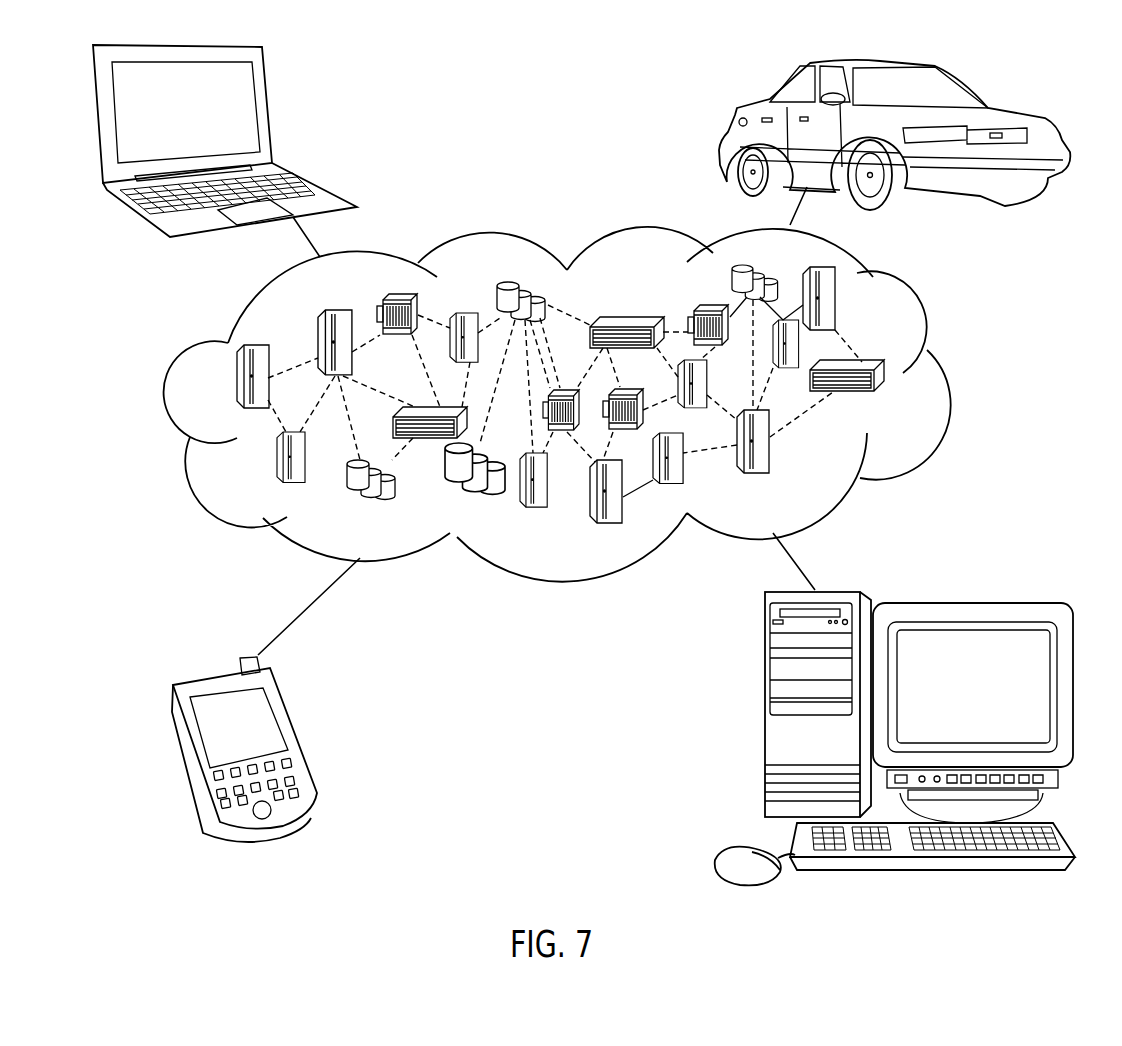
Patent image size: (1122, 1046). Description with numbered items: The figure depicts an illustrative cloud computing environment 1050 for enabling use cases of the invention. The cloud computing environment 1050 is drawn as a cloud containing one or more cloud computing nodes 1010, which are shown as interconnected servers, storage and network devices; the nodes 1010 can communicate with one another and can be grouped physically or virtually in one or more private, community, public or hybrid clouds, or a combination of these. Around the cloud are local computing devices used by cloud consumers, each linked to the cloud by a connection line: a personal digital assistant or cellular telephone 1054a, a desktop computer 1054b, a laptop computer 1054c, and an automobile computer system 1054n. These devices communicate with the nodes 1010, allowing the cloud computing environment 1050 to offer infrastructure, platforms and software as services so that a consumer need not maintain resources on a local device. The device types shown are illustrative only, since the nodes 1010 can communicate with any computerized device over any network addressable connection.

The cloud computing nodes 1010 is at (900, 398).
The cloud computing environment 1050 is at (933, 313).
The personal digital assistant or cellular telephone 1054a is at (294, 723).
The desktop computer 1054b is at (765, 717).
The laptop computer 1054c is at (268, 105).
The automobile computer system 1054n is at (737, 110).